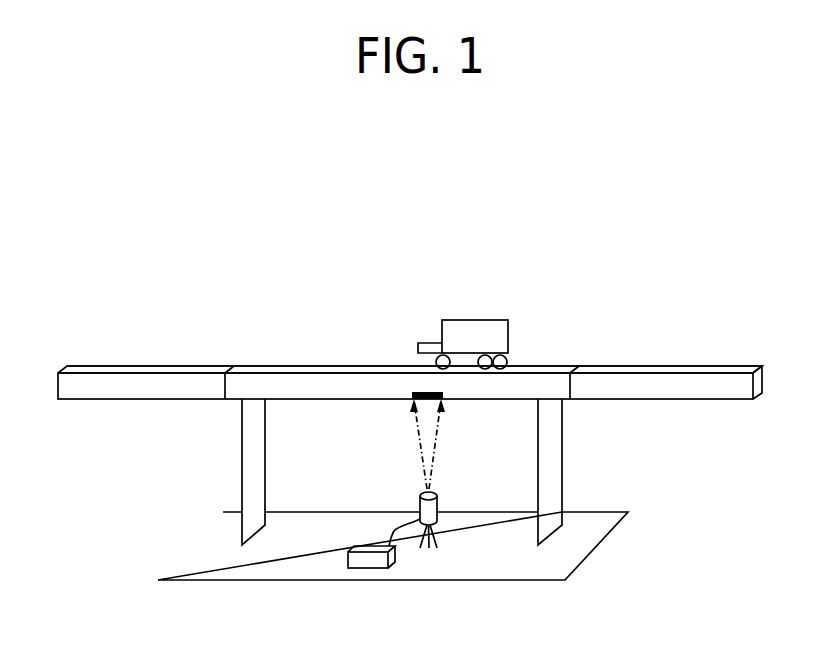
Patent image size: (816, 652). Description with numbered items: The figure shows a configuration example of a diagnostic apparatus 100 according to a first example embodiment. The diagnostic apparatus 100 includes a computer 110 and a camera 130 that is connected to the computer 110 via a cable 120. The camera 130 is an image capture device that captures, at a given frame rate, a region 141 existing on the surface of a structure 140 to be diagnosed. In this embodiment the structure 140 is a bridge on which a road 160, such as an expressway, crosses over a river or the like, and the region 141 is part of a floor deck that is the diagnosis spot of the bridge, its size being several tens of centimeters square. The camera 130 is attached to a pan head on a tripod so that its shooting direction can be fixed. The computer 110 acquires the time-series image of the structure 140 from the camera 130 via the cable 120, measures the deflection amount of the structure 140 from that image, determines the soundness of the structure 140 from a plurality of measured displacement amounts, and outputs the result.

The diagnostic apparatus 100 is at (502, 514).
The computer 110 is at (346, 562).
The cable 120 is at (392, 531).
The camera 130 is at (440, 502).
The structure 140 is at (328, 365).
The region 141 is at (409, 394).
The road 160 is at (183, 353).